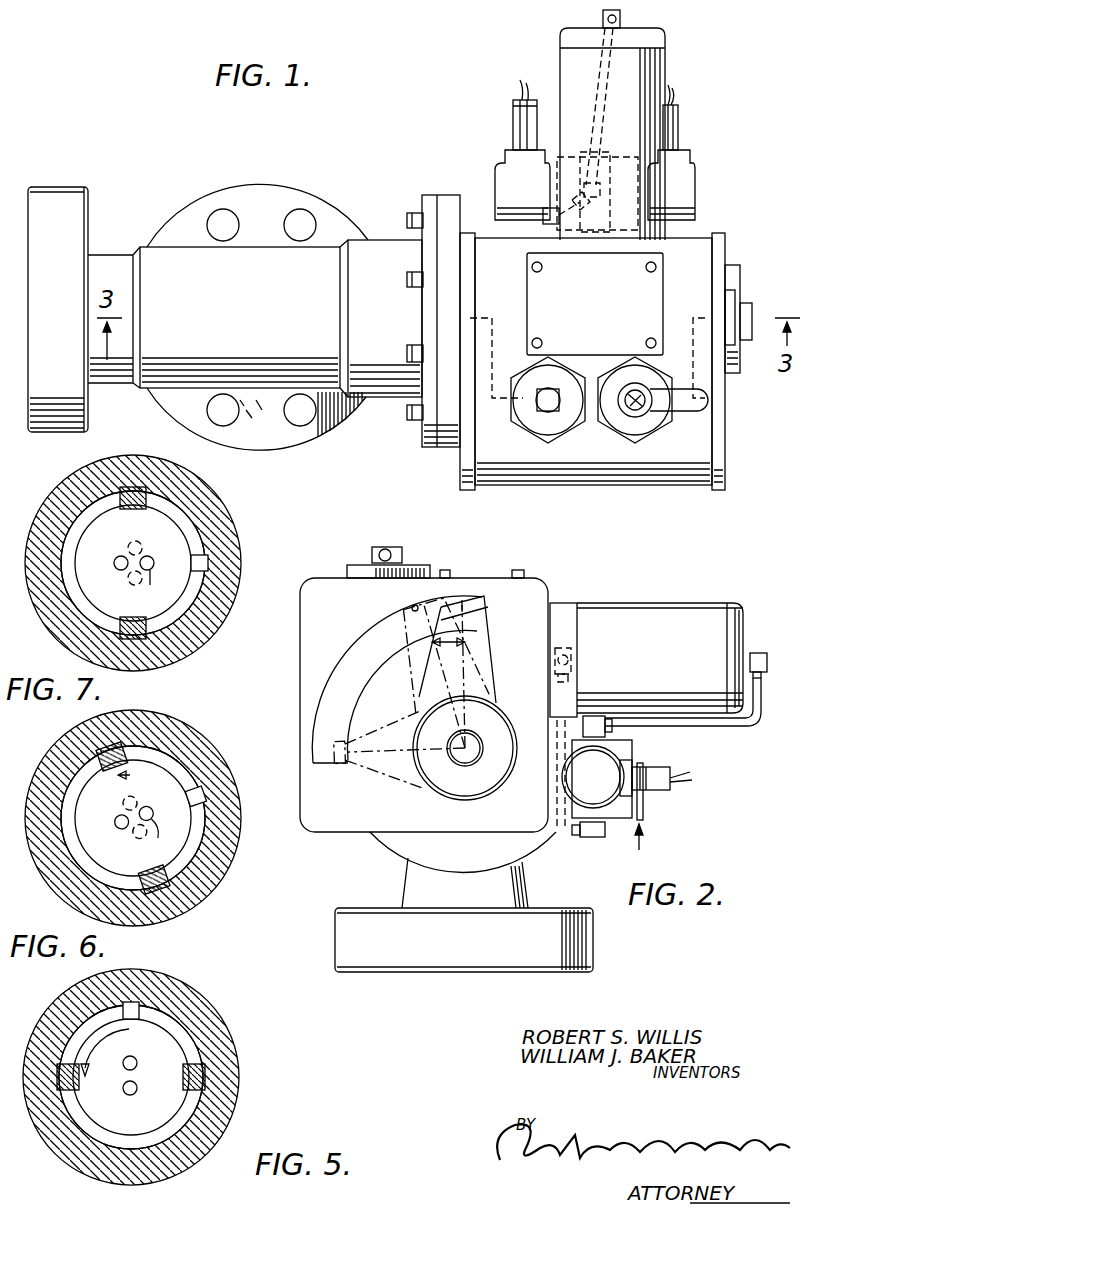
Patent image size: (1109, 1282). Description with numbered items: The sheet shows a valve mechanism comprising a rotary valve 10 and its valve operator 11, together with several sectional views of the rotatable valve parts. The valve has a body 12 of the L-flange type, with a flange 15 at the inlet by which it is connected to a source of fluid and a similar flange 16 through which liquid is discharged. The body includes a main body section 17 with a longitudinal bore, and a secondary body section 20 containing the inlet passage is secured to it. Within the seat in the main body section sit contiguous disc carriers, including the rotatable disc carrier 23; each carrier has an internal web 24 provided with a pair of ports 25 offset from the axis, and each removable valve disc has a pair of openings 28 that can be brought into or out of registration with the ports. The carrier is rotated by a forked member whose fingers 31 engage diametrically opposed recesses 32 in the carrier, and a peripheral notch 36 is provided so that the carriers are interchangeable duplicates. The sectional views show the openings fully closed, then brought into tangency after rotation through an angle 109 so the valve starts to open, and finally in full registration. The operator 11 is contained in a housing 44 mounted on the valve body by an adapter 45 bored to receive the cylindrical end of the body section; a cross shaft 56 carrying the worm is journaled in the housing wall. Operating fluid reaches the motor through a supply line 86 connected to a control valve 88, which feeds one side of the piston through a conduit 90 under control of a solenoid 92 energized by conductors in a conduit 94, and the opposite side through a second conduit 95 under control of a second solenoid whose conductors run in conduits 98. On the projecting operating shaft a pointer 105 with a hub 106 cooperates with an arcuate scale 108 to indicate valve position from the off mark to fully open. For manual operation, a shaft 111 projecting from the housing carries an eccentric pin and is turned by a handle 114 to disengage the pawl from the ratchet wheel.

In FIG. 1, the rotary valve 10 is at (322, 246).
In FIG. 1, the valve operator 11 is at (718, 202).
In FIG. 2, the valve operator 11 is at (347, 833).
In FIG. 1, the body 12 is at (182, 248).
In FIG. 1, the flange 15 is at (312, 424).
In FIG. 2, the flange 15 is at (575, 945).
In FIG. 1, the flange 16 is at (57, 192).
In FIG. 1, the main body section 17 is at (240, 317).
In FIG. 7, the main body section 17 is at (192, 626).
In FIG. 6, the main body section 17 is at (225, 855).
In FIG. 5, the main body section 17 is at (215, 1022).
In FIG. 2, the secondary body section 20 is at (520, 882).
In FIG. 7, the disc carrier 23 is at (185, 520).
In FIG. 6, the disc carrier 23 is at (170, 758).
In FIG. 5, the disc carrier 23 is at (158, 1010).
In FIG. 7, the internal web 24 is at (178, 550).
In FIG. 6, the internal web 24 is at (180, 817).
In FIG. 5, the internal web 24 is at (165, 1040).
In FIG. 7, the ports 25 is at (137, 584).
In FIG. 6, the ports 25 is at (143, 839).
In FIG. 5, the ports 25 is at (137, 1085).
In FIG. 7, the openings 28 is at (138, 547).
In FIG. 6, the openings 28 is at (138, 801).
In FIG. 7, the fingers 31 is at (131, 488).
In FIG. 6, the fingers 31 is at (165, 882).
In FIG. 5, the fingers 31 is at (203, 1085).
In FIG. 7, the recesses 32 is at (122, 510).
In FIG. 6, the recesses 32 is at (105, 752).
In FIG. 5, the recesses 32 is at (205, 1062).
In FIG. 7, the notch 36 is at (208, 565).
In FIG. 6, the notch 36 is at (200, 795).
In FIG. 5, the notch 36 is at (131, 1003).
In FIG. 1, the housing 44 is at (705, 470).
In FIG. 2, the housing 44 is at (548, 592).
In FIG. 1, the adapter 45 is at (381, 318).
In FIG. 1, the cross shaft 56 is at (553, 406).
In FIG. 2, the supply line 86 is at (647, 812).
In FIG. 1, the control valve 88 is at (697, 161).
In FIG. 2, the control valve 88 is at (643, 769).
In FIG. 1, the conduit 90 is at (528, 238).
In FIG. 2, the conduit 90 is at (595, 838).
In FIG. 2, the solenoid 92 is at (578, 802).
In FIG. 1, the conduit 94 is at (672, 105).
In FIG. 1, the second conduit 95 is at (646, 33).
In FIG. 2, the second conduit 95 is at (765, 728).
In FIG. 1, the conduits 98 is at (518, 124).
In FIG. 1, the pointer 105 is at (745, 303).
In FIG. 2, the pointer 105 is at (477, 655).
In FIG. 1, the hub 106 is at (728, 262).
In FIG. 2, the hub 106 is at (455, 770).
In FIG. 2, the arcuate scale 108 is at (348, 657).
In FIG. 2, the angle 109 is at (437, 697).
In FIG. 7, the angle 109 is at (95, 705).
In FIG. 1, the shaft 111 is at (640, 411).
In FIG. 1, the handle 114 is at (705, 405).